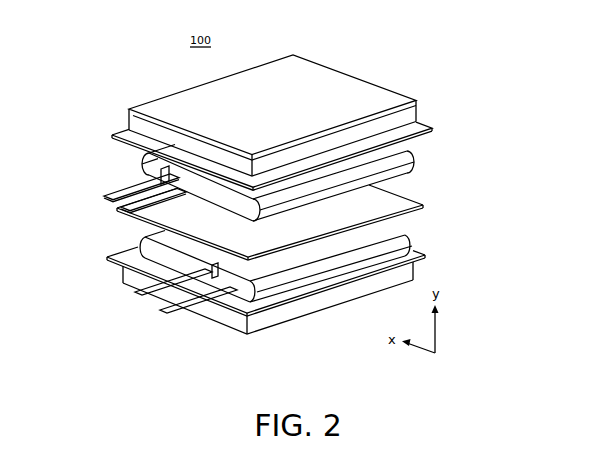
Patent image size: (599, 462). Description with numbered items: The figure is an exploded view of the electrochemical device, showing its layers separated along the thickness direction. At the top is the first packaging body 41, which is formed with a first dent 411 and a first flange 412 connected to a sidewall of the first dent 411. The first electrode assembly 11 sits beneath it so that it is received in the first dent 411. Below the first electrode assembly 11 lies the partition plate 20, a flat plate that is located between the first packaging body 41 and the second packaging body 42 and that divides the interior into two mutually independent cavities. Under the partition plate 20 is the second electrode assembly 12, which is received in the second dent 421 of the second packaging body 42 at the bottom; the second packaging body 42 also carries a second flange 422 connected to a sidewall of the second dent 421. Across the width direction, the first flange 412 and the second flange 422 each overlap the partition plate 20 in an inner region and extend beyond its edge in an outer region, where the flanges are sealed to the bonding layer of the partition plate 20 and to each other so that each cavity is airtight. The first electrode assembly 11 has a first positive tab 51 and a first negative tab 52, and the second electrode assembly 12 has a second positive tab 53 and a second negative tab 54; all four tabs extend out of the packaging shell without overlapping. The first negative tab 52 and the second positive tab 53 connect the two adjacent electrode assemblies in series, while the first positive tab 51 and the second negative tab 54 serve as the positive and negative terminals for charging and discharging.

The first packaging body 41 is at (288, 121).
The first dent 411 is at (312, 77).
The first flange 412 is at (421, 126).
The first electrode assembly 11 is at (398, 153).
The partition plate 20 is at (408, 201).
The second electrode assembly 12 is at (393, 238).
The second packaging body 42 is at (265, 293).
The second dent 421 is at (107, 257).
The second flange 422 is at (233, 316).
The first positive tab 51 is at (110, 194).
The first negative tab 52 is at (142, 208).
The second positive tab 53 is at (143, 288).
The second negative tab 54 is at (187, 300).